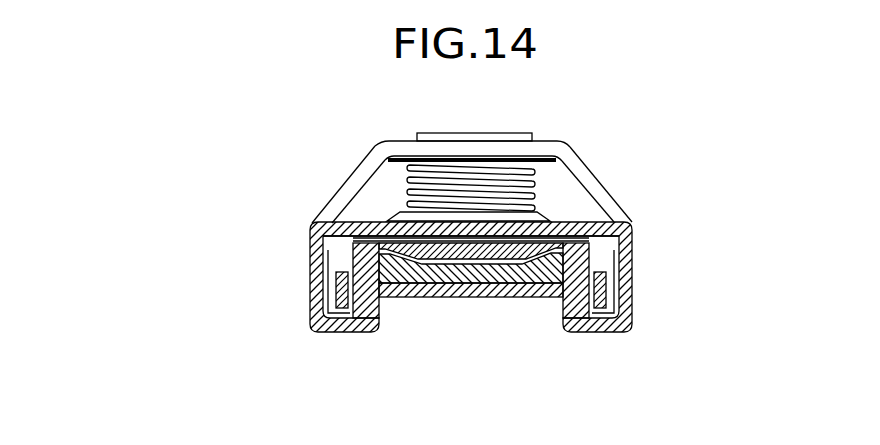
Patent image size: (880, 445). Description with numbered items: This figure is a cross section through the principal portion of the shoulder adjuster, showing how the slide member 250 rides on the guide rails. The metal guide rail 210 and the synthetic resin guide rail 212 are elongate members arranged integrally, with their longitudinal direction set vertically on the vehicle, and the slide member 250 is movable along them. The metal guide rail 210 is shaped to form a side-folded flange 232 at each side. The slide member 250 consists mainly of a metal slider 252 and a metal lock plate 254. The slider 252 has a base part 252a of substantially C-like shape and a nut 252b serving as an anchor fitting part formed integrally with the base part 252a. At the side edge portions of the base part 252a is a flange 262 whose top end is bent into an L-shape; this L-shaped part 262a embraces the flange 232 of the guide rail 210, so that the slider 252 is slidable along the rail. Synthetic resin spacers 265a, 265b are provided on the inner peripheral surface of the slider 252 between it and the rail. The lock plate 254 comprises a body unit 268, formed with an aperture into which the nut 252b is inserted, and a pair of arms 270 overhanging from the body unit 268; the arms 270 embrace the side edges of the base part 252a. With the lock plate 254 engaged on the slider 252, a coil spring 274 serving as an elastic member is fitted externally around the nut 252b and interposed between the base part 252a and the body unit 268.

The metal guide rail 210 is at (457, 270).
The synthetic resin guide rail 212 is at (505, 298).
The side-folded flange 232 is at (338, 306).
The slide member 250 is at (298, 218).
The metal slider 252 is at (298, 242).
The base part 252a is at (344, 213).
The nut 252b is at (450, 133).
The metal lock plate 254 is at (597, 168).
The flange 262 is at (310, 266).
The L-shaped part 262a is at (382, 327).
The synthetic resin spacer 265a is at (326, 290).
The synthetic resin spacer 265b is at (608, 221).
The body unit 268 is at (546, 148).
The arms 270 is at (345, 183).
The coil spring 274 is at (395, 160).